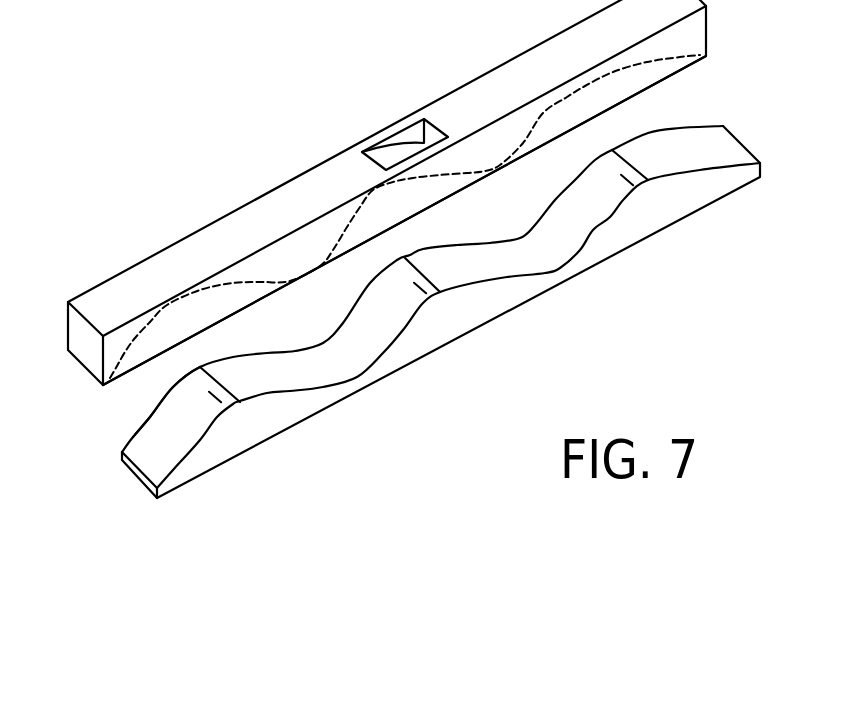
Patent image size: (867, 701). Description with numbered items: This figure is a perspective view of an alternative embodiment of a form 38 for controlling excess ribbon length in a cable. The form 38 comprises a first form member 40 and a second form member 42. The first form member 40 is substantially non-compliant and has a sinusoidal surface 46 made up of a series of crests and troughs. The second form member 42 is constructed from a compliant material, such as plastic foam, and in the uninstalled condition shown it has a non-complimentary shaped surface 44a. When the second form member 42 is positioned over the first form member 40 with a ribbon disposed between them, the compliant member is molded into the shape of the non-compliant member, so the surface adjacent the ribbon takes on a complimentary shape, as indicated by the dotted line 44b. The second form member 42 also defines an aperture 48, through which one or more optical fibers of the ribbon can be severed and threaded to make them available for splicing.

The form 38 is at (319, 92).
The first form member 40 is at (616, 251).
The second form member 42 is at (115, 285).
The non-complimentary shaped surface 44a is at (672, 75).
The dotted line 44b is at (678, 56).
The surface 46 is at (152, 443).
The aperture 48 is at (425, 120).